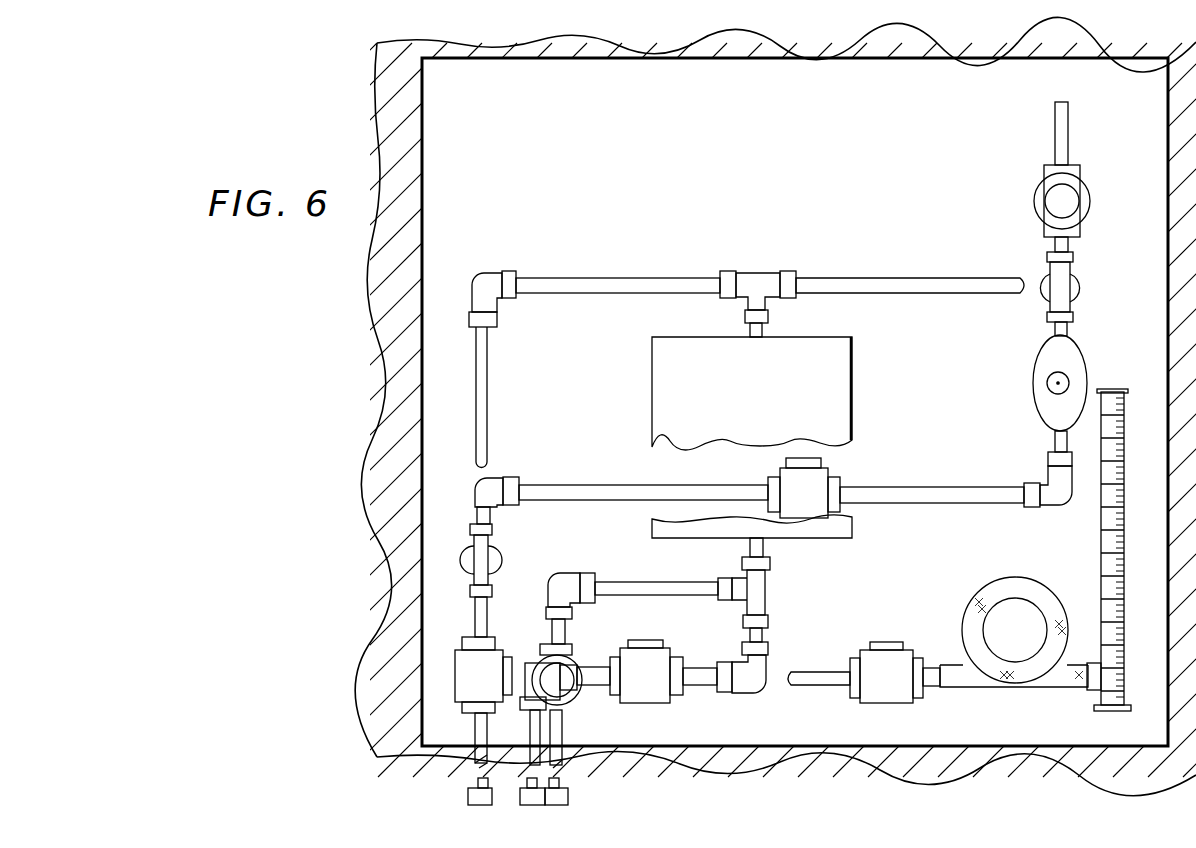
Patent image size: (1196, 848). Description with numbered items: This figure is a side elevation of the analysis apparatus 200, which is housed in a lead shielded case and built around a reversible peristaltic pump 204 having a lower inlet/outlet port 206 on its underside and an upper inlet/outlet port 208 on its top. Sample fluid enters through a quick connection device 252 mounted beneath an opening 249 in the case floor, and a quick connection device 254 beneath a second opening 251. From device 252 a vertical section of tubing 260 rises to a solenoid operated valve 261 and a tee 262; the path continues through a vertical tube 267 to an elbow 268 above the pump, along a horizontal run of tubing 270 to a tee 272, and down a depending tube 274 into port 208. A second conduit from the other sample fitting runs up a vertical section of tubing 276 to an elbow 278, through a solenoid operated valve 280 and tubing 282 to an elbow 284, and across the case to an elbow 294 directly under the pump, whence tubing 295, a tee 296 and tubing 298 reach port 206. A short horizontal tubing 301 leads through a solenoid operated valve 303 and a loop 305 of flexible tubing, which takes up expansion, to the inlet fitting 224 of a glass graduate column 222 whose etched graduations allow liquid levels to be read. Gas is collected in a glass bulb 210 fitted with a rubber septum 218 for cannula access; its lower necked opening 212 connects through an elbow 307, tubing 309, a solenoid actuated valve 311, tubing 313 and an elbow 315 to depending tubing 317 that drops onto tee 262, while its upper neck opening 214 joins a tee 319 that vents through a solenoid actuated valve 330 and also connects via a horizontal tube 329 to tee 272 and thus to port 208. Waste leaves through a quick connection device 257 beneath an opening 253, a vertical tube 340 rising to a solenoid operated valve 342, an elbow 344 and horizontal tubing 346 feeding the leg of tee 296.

The analysis apparatus 200 is at (839, 244).
The peristaltic pump 204 is at (852, 419).
The inlet/outlet port 206 is at (766, 549).
The inlet/outlet port 208 is at (770, 316).
The glass bulb 210 is at (1086, 380).
The necked opening 212 is at (1054, 441).
The neck opening 214 is at (1068, 329).
The rubber septum 218 is at (1049, 381).
The glass graduate column 222 is at (1126, 484).
The inlet fitting 224 is at (1091, 691).
The opening 249 is at (474, 757).
The opening 251 is at (530, 738).
The quick connection device 252 is at (468, 797).
The opening 253 is at (562, 768).
The quick connection device 254 is at (528, 786).
The quick connection device 257 is at (568, 797).
The vertical section of tubing 260 is at (475, 723).
The solenoid operated valve 261 is at (460, 645).
The tee 262 is at (489, 538).
The vertical tube 267 is at (488, 356).
The elbow 268 is at (505, 271).
The tubing 270 is at (658, 278).
The tee 272 is at (757, 271).
The depending tube 274 is at (750, 330).
The vertical section of tubing 276 is at (558, 712).
The elbow 278 is at (530, 668).
The solenoid operated valve 280 is at (647, 648).
The tubing 282 is at (704, 686).
The elbow 284 is at (758, 693).
The elbow 294 is at (768, 648).
The tubing 295 is at (750, 633).
The tee 296 is at (766, 591).
The tubing 298 is at (750, 546).
The tubing 301 is at (820, 686).
The solenoid operated valve 303 is at (890, 655).
The loop 305 is at (985, 610).
The elbow 307 is at (1058, 505).
The tubing 309 is at (962, 503).
The solenoid actuated valve 311 is at (820, 478).
The tubing 313 is at (633, 485).
The elbow 315 is at (497, 480).
The depending tubing 317 is at (478, 513).
The tee 319 is at (1072, 283).
The horizontal tube 329 is at (936, 278).
The solenoid actuated valve 330 is at (1080, 182).
The vertical tube 340 is at (562, 739).
The solenoid operated valve 342 is at (570, 655).
The elbow 344 is at (568, 580).
The tubing 346 is at (665, 582).